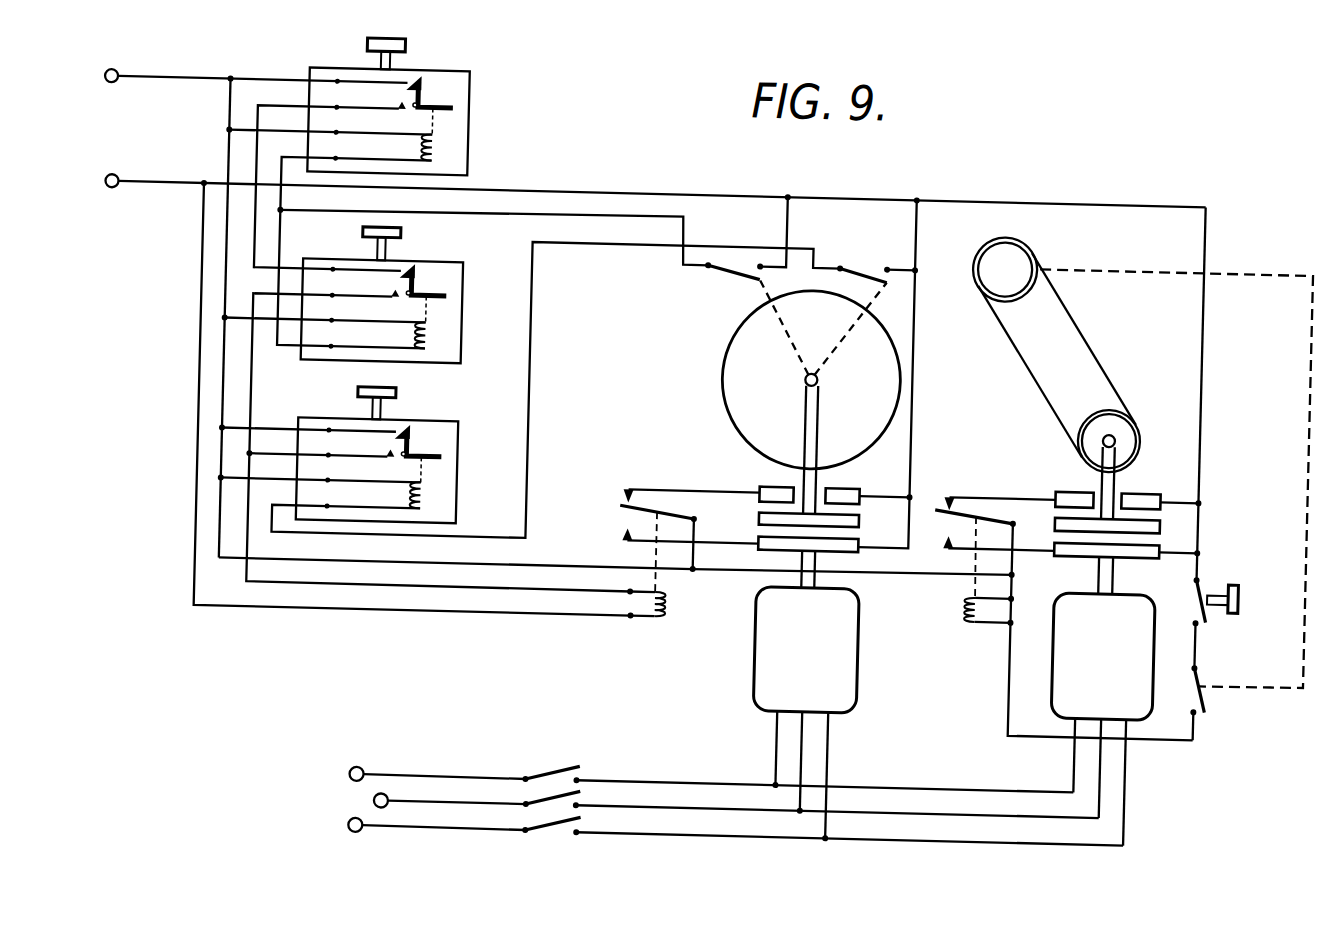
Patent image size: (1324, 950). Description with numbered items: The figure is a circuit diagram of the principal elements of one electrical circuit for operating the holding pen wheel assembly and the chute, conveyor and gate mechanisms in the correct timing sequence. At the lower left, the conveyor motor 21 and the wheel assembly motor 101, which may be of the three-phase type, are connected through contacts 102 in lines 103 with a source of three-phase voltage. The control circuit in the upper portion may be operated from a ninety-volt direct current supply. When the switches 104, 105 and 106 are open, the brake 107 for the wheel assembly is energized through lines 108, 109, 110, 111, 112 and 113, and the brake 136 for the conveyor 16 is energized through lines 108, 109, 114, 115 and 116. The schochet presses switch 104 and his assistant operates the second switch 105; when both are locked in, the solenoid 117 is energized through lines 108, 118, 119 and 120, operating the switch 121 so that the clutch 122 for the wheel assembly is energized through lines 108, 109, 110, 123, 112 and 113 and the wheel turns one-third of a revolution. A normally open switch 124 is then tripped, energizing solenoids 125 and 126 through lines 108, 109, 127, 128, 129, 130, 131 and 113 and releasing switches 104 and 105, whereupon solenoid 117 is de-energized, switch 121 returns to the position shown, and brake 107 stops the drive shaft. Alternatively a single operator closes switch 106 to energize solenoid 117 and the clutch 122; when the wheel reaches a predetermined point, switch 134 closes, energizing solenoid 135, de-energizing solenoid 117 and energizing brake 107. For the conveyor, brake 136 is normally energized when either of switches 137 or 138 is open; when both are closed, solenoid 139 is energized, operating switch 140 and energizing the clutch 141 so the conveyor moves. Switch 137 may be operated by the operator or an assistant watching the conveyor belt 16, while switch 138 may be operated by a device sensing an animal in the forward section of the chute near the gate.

The conveyor 16 is at (1094, 316).
The conveyor motor 21 is at (1146, 687).
The wheel assembly motor 101 is at (778, 635).
The contacts 102 is at (564, 757).
The lines 103 is at (484, 821).
The switch 104 is at (425, 88).
The switch 105 is at (425, 277).
The switch 106 is at (419, 442).
The brake 107 is at (857, 467).
The line 108 is at (179, 77).
The line 109 is at (228, 100).
The line 110 is at (704, 541).
The line 111 is at (690, 475).
The line 112 is at (919, 338).
The line 113 is at (656, 179).
The line 114 is at (1025, 552).
The line 115 is at (1033, 475).
The line 116 is at (1208, 359).
The solenoid 117 is at (670, 589).
The line 118 is at (256, 152).
The line 119 is at (255, 374).
The line 120 is at (494, 606).
The switch 121 is at (640, 502).
The clutch 122 is at (861, 537).
The line 123 is at (731, 527).
The switch 124 is at (735, 267).
The solenoid 125 is at (440, 141).
The solenoid 126 is at (437, 329).
The line 127 is at (242, 126).
The line 128 is at (241, 314).
The line 129 is at (281, 246).
The line 130 is at (551, 209).
The line 131 is at (789, 216).
The switch 134 is at (862, 254).
The solenoid 135 is at (438, 489).
The brake 136 is at (1150, 475).
The switch 137 is at (1221, 593).
The switch 138 is at (1220, 678).
The solenoid 139 is at (980, 591).
The switch 140 is at (970, 501).
The clutch 141 is at (1149, 531).